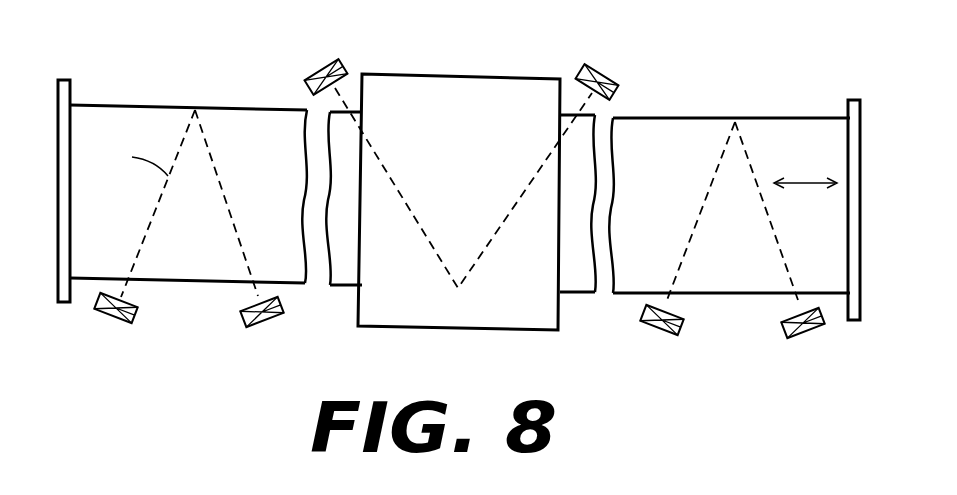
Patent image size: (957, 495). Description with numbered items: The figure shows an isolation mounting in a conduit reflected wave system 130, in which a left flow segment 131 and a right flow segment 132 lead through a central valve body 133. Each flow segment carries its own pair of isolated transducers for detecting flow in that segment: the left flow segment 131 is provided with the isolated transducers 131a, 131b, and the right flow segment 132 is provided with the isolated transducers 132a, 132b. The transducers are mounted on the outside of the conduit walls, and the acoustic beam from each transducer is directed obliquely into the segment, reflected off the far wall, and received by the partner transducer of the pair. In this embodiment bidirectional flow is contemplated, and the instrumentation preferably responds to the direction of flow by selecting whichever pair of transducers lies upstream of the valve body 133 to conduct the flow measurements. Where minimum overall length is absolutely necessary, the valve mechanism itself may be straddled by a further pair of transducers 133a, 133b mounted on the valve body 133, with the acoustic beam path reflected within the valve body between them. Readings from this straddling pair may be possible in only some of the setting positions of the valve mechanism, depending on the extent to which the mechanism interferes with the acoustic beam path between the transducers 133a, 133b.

The system 130 is at (569, 96).
The left flow segment 131 is at (286, 177).
The isolated transducer 131a is at (120, 323).
The isolated transducer 131b is at (254, 325).
The right flow segment 132 is at (680, 186).
The isolated transducer 132a is at (653, 337).
The isolated transducer 132b is at (803, 337).
The valve body 133 is at (485, 127).
The transducer 133a is at (320, 66).
The transducer 133b is at (607, 67).